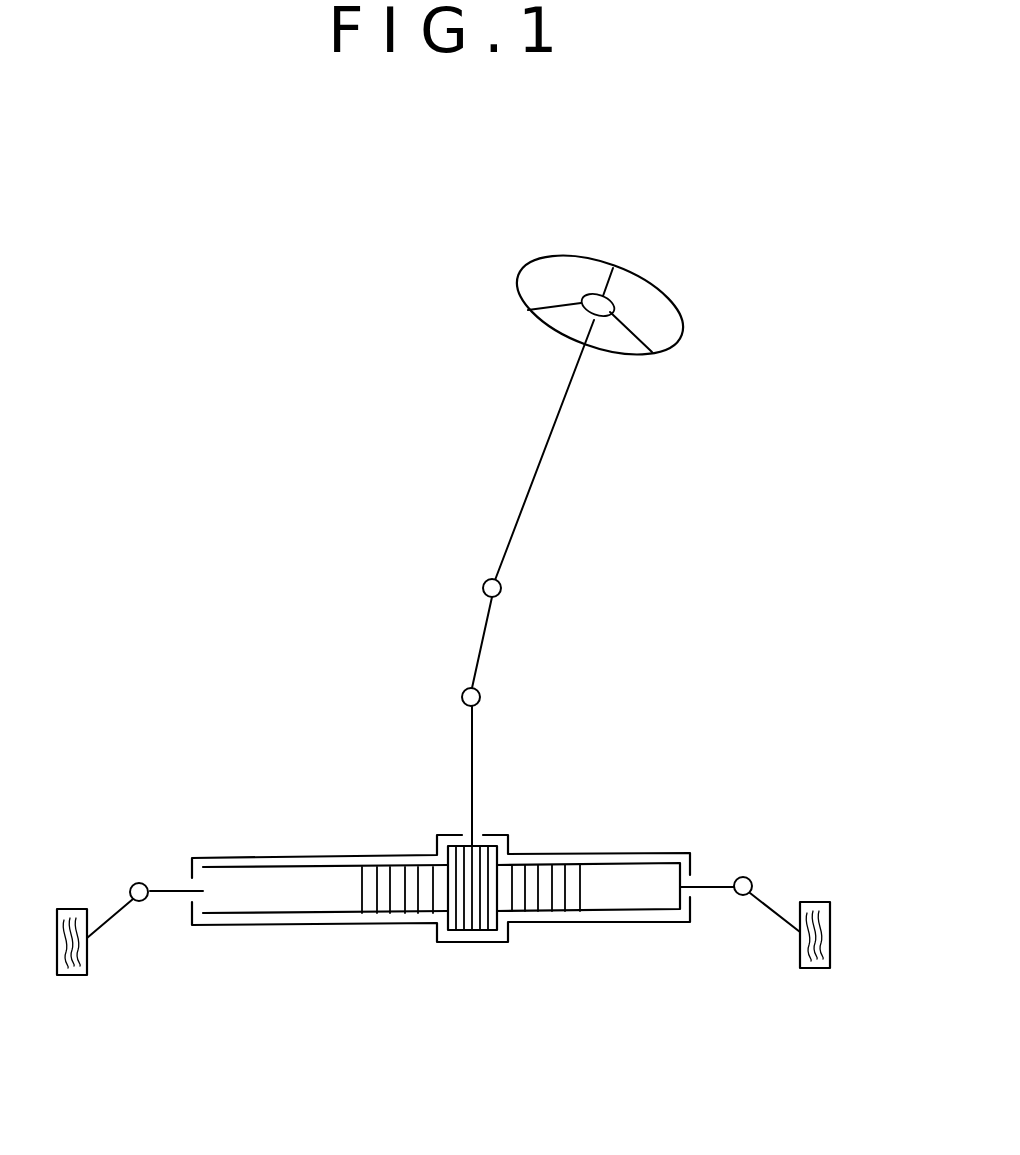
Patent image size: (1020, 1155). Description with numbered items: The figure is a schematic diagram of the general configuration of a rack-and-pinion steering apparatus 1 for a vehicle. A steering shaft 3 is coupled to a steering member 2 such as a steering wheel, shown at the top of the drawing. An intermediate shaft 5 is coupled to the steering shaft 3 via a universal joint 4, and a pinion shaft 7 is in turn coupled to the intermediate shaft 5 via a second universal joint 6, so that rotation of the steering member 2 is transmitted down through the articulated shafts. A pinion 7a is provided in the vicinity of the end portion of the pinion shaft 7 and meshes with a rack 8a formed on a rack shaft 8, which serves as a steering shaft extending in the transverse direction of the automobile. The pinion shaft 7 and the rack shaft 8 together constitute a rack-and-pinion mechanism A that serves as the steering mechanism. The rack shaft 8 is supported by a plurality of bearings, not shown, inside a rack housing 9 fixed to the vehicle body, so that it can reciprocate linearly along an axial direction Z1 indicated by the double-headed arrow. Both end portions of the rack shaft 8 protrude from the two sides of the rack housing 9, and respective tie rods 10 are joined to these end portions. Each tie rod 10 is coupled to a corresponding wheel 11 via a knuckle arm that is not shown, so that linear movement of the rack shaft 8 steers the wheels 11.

The steering apparatus 1 is at (705, 253).
The steering member 2 is at (588, 256).
The steering shaft 3 is at (543, 447).
The universal joint 4 is at (501, 592).
The intermediate shaft 5 is at (478, 641).
The universal joint 6 is at (480, 700).
The pinion shaft 7 is at (474, 793).
The pinion 7a is at (484, 930).
The rack shaft 8 is at (547, 912).
The rack 8a is at (410, 905).
The rack housing 9 is at (344, 856).
The tie rod 10 is at (116, 913).
The wheel 11 is at (72, 975).
The rack-and-pinion mechanism A is at (517, 938).
The axial direction Z1 is at (746, 866).